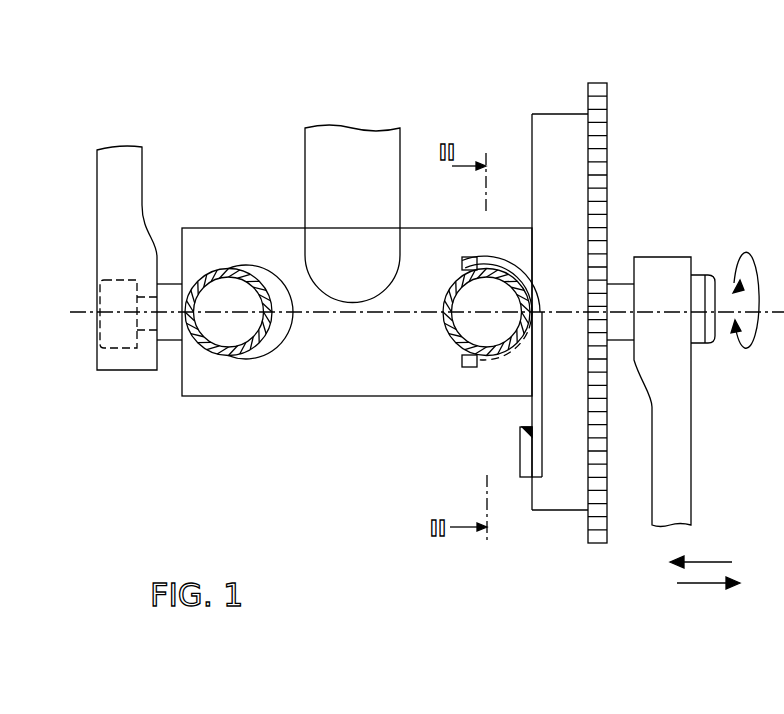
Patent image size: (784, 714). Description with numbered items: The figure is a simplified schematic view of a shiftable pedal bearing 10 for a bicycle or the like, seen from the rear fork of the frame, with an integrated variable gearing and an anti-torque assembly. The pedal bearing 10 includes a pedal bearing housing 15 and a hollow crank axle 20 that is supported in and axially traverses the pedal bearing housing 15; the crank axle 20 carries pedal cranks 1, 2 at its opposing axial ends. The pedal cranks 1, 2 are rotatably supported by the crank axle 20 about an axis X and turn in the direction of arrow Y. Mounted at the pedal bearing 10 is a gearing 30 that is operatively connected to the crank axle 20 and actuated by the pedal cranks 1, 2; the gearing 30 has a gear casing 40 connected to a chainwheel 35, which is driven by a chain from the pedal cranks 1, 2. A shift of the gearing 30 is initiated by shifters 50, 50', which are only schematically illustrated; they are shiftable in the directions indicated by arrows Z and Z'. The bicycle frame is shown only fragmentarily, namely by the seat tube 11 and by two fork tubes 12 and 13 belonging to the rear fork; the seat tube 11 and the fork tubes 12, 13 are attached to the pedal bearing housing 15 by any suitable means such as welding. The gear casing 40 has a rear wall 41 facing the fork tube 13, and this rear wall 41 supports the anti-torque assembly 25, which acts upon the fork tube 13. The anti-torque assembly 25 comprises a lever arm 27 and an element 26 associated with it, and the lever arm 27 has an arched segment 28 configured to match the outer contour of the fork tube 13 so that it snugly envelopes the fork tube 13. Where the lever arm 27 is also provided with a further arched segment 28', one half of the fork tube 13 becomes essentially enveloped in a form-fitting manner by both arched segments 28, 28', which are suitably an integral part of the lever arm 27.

The pedal crank 1 is at (133, 172).
The pedal crank 2 is at (680, 447).
The pedal bearing 10 is at (325, 437).
The seat tube 11 is at (318, 168).
The fork tube 12 is at (243, 355).
The fork tube 13 is at (443, 333).
The pedal bearing housing 15 is at (280, 388).
The crank axle 20 is at (168, 332).
The anti-torque assembly 25 is at (522, 373).
The stop block 26 is at (525, 477).
The lever arm 27 is at (547, 467).
The arched segment 28 is at (488, 259).
The further arched segment 28' is at (468, 386).
The gearing 30 is at (624, 175).
The chainwheel 35 is at (608, 118).
The gear casing 40 is at (558, 114).
The rear wall 41 is at (531, 160).
The shifter 50 is at (713, 340).
The shifter 50' is at (125, 350).
The axis X is at (762, 312).
The arrow Y is at (744, 262).
The arrow Z is at (701, 541).
The arrow Z' is at (708, 601).